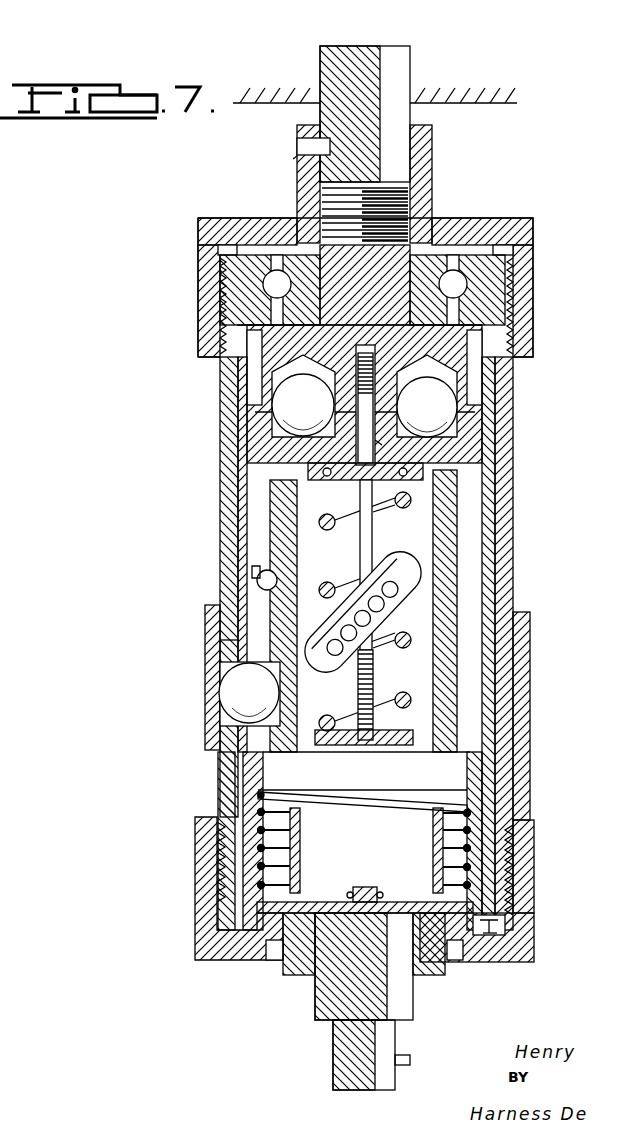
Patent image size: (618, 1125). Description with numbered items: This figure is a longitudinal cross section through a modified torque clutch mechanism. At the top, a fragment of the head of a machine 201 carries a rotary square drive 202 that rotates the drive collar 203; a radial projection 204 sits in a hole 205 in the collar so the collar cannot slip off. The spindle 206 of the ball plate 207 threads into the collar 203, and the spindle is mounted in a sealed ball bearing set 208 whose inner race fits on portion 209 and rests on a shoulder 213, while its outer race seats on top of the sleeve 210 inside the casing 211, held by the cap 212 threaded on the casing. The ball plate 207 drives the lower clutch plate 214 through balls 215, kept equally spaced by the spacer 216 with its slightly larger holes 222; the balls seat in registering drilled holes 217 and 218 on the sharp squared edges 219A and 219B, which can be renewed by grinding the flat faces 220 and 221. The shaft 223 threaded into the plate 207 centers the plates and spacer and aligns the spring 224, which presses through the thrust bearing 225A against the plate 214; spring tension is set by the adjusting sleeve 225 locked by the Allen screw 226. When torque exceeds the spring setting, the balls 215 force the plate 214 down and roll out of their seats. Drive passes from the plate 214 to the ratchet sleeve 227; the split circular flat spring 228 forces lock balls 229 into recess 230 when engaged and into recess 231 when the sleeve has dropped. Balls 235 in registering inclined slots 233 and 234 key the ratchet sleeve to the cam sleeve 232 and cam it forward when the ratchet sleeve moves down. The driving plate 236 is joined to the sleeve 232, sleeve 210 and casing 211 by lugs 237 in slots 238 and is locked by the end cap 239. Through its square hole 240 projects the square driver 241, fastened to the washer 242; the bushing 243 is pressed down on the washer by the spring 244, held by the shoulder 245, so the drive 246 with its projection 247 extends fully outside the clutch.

The head of a machine 201 is at (500, 104).
The rotary square drive 202 is at (405, 63).
The drive collar 203 is at (432, 142).
The radial projection 204 is at (300, 143).
The hole 205 is at (297, 156).
The spindle 206 is at (400, 196).
The ball plate 207 is at (222, 358).
The sealed ball bearing set 208 is at (512, 268).
The portion of the spindle 209 is at (383, 272).
The sleeve 210 is at (498, 538).
The casing 211 is at (513, 515).
The cap 212 is at (530, 297).
The shoulder 213 is at (520, 340).
The lower clutch plate 214 is at (480, 480).
The balls 215 is at (458, 410).
The spacer 216 is at (268, 403).
The drilled holes 217 is at (280, 380).
The drilled holes 218 is at (265, 425).
The squared edges 219A is at (478, 383).
The squared edges 219B is at (478, 427).
The flat drilled face 220 is at (385, 395).
The flat drilled face 221 is at (379, 442).
The holes 222 is at (358, 390).
The shaft 223 is at (368, 505).
The spring 224 is at (373, 660).
The adjusting sleeve 225 is at (400, 746).
The thrust bearing 225A is at (310, 470).
The Allen screw 226 is at (375, 680).
The ratchet sleeve 227 is at (280, 530).
The split circular flat spring 228 is at (205, 620).
The lock balls 229 is at (230, 690).
The recess 230 is at (235, 712).
The recess 231 is at (215, 640).
The cam sleeve 232 is at (490, 776).
The slots 233 is at (262, 585).
The slots 234 is at (252, 572).
The balls 235 is at (350, 588).
The driving plate 236 is at (440, 972).
The lugs 237 is at (505, 928).
The slots 238 is at (530, 942).
The end cap 239 is at (195, 848).
The square hole 240 is at (310, 975).
The square driver 241 is at (400, 998).
The washer 242 is at (265, 904).
The bushing 243 is at (470, 838).
The spring 244 is at (465, 862).
The shoulder 245 is at (248, 780).
The drive 246 is at (398, 1040).
The projection 247 is at (403, 1066).